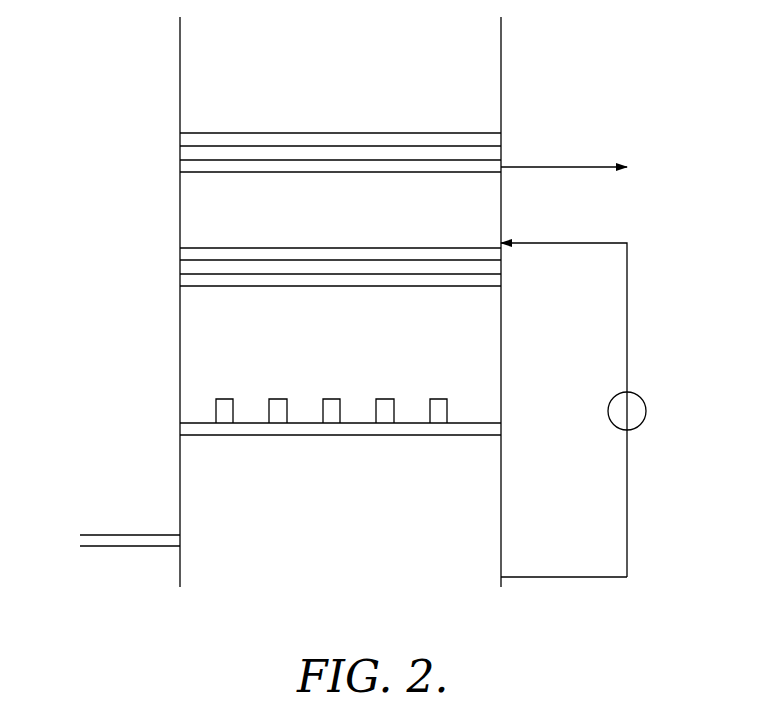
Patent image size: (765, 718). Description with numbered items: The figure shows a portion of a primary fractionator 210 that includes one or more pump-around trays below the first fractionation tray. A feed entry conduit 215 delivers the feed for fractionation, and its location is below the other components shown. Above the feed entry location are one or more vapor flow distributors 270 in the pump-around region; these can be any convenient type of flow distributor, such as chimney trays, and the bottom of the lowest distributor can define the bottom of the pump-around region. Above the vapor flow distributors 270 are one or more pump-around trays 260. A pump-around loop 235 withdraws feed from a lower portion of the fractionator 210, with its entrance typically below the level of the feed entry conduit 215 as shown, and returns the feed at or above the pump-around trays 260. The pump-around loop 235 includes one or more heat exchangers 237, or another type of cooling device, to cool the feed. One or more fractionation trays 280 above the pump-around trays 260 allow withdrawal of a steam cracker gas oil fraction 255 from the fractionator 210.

The fractionator 210 is at (110, 98).
The feed entry conduit 215 is at (147, 557).
The pump-around loop 235 is at (627, 478).
The heat exchanger 237 is at (646, 411).
The steam cracker gas oil fraction 255 is at (577, 167).
The pump-around trays 260 is at (180, 251).
The vapor flow distributors 270 is at (501, 428).
The fractionation trays 280 is at (180, 137).